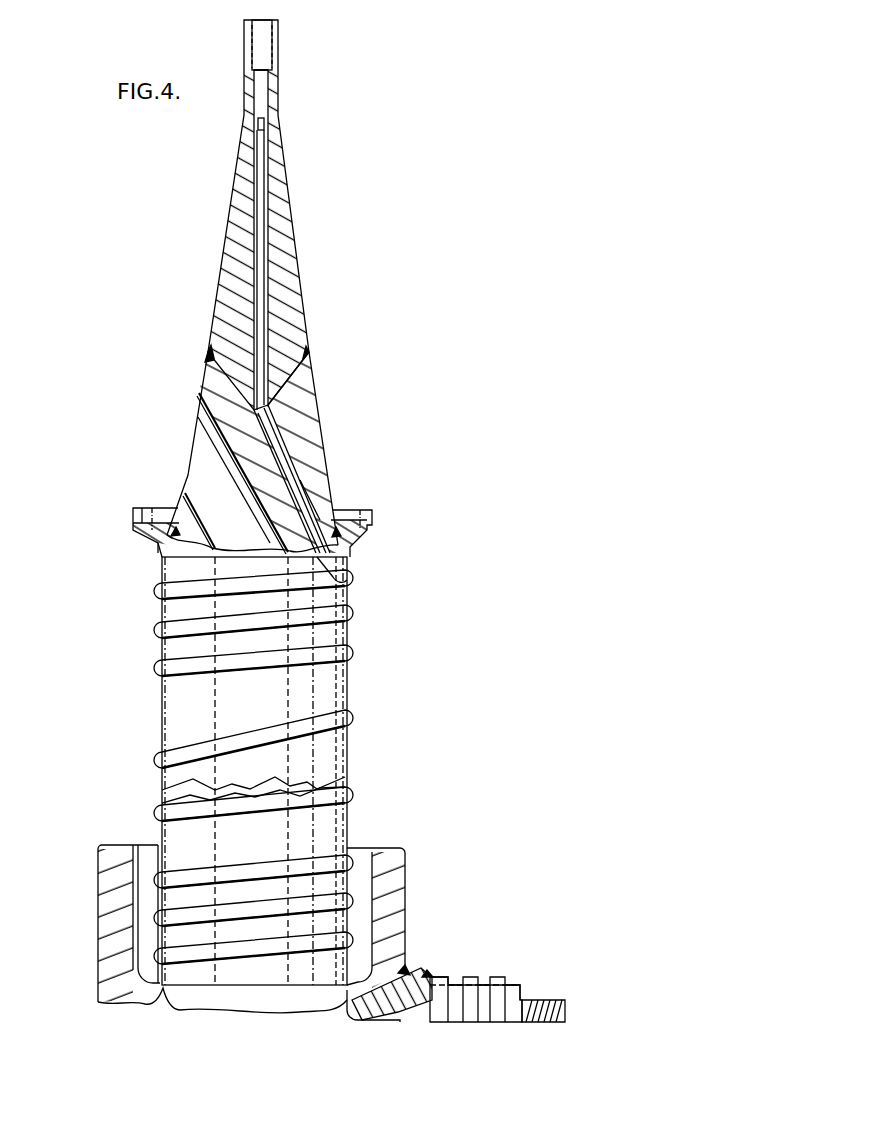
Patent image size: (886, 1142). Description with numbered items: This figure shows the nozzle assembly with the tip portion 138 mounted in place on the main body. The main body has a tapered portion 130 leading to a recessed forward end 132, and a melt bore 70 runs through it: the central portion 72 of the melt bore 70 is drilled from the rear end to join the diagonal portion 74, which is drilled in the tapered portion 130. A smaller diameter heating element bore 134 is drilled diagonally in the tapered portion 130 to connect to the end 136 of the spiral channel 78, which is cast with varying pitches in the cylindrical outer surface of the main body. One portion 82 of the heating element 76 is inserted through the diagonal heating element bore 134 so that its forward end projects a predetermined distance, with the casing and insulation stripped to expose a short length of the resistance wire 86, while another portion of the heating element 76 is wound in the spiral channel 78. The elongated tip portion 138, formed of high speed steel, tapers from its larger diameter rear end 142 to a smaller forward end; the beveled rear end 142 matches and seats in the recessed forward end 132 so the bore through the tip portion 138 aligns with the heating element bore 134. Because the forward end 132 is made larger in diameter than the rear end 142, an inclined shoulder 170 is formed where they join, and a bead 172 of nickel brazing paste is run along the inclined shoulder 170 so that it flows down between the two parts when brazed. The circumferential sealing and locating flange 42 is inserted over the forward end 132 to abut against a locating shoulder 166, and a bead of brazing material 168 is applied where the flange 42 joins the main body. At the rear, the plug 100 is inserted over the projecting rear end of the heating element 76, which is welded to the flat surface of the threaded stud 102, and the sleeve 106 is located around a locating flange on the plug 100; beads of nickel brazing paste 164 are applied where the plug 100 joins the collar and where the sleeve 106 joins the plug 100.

The locating and sealing flange 42 is at (372, 541).
The melt bore 70 is at (280, 820).
The central portion of the melt bore 72 is at (280, 690).
The diagonal portion of the melt bore 74 is at (200, 468).
The heating element 76 is at (350, 617).
The spiral channel 78 is at (350, 660).
The portion of the heating element 82 is at (300, 490).
The resistance wire 86 is at (264, 122).
The plug 100 is at (426, 972).
The threaded stud 102 is at (550, 1004).
The sleeve 106 is at (495, 978).
The tapered portion 130 is at (316, 435).
The recessed forward end 132 is at (302, 352).
The heating element bore 134 is at (318, 500).
The end of the spiral channel 136 is at (352, 570).
The tip portion 138 is at (285, 258).
The rear end of the tip portion 142 is at (300, 392).
The beads of nickel brazing paste 164 is at (406, 963).
The locating shoulder 166 is at (160, 552).
The bead of brazing material 168 is at (173, 528).
The inclined shoulder 170 is at (208, 355).
The bead of nickel brazing paste 172 is at (212, 350).